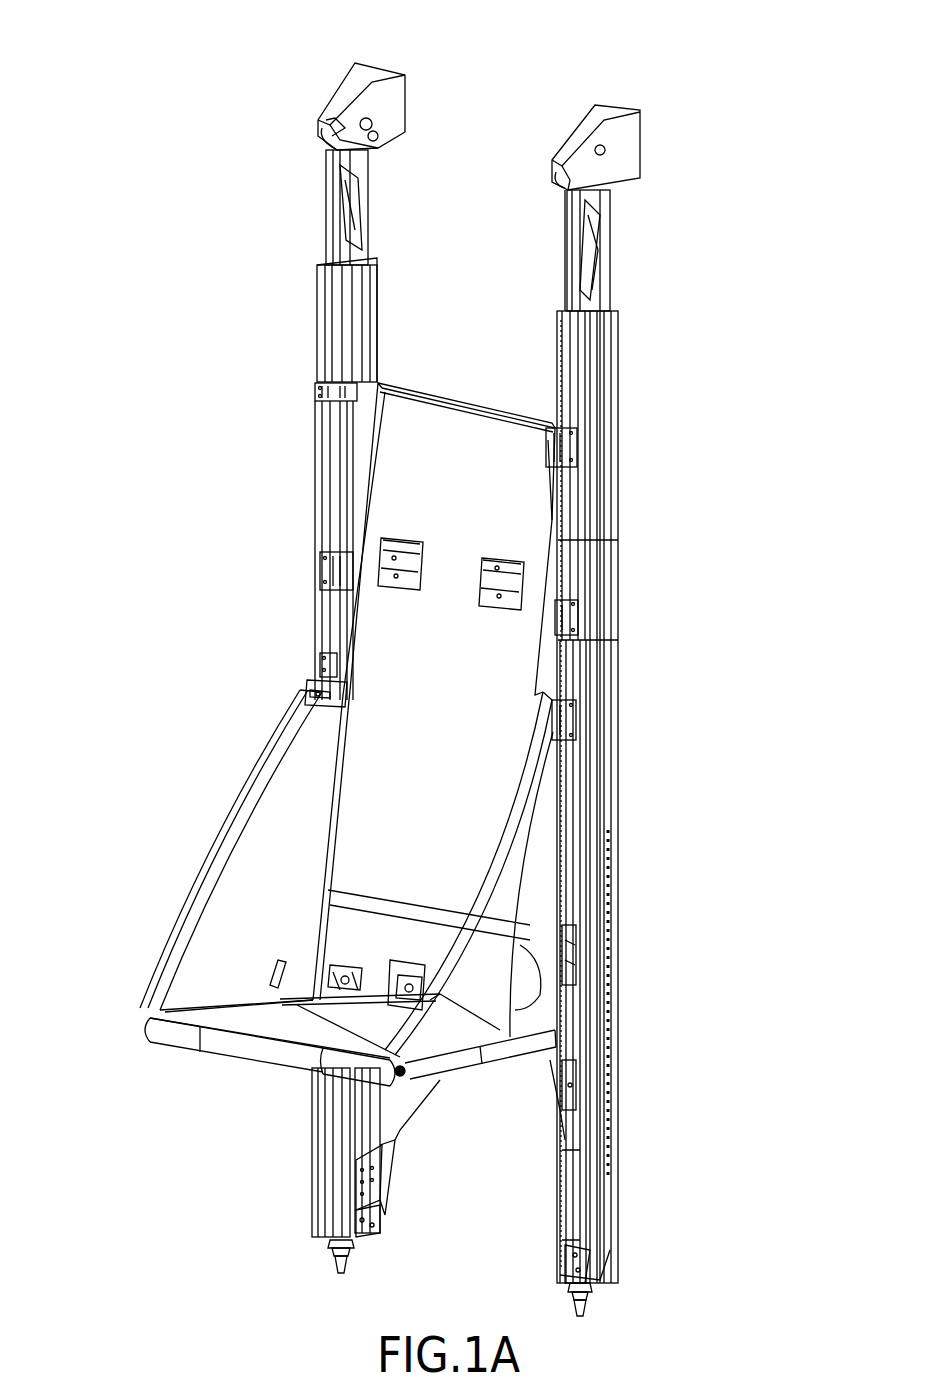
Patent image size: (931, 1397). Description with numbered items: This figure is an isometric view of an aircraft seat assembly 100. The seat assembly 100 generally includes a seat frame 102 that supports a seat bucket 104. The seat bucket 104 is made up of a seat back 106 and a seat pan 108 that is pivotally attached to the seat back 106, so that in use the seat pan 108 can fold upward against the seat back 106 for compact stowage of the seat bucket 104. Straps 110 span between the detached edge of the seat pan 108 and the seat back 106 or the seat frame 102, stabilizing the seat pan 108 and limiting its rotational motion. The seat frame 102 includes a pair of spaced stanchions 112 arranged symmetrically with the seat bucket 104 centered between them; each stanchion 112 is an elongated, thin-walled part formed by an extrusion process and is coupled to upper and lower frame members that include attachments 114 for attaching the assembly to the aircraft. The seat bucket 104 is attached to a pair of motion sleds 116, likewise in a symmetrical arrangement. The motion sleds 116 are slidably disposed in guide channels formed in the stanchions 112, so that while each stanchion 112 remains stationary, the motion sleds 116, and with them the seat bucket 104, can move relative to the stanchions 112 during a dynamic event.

The aircraft seat assembly 100 is at (264, 41).
The seat frame 102 is at (612, 345).
The seat bucket 104 is at (260, 1052).
The seat back 106 is at (370, 650).
The seat pan 108 is at (148, 1030).
The straps 110 is at (215, 897).
The stanchion 112 is at (322, 292).
The attachments 114 is at (630, 148).
The motion sled 116 is at (332, 488).